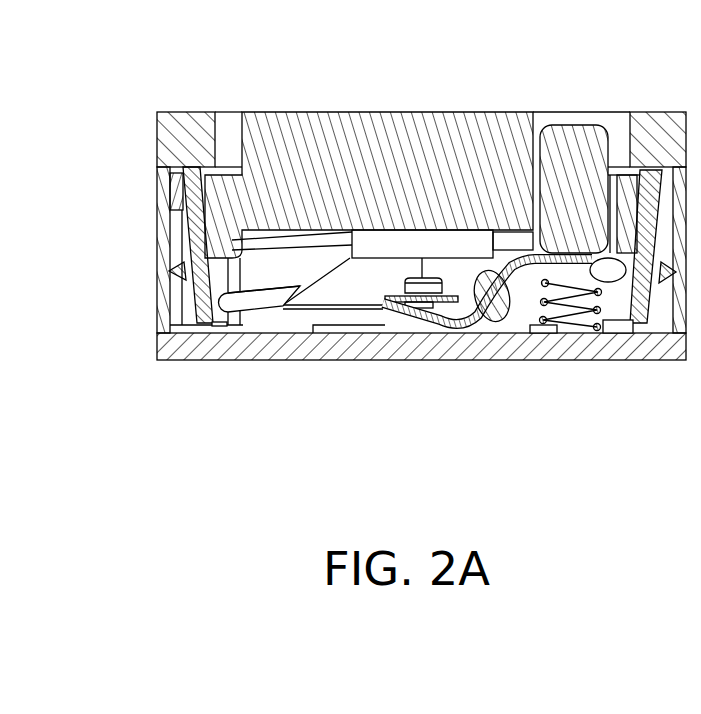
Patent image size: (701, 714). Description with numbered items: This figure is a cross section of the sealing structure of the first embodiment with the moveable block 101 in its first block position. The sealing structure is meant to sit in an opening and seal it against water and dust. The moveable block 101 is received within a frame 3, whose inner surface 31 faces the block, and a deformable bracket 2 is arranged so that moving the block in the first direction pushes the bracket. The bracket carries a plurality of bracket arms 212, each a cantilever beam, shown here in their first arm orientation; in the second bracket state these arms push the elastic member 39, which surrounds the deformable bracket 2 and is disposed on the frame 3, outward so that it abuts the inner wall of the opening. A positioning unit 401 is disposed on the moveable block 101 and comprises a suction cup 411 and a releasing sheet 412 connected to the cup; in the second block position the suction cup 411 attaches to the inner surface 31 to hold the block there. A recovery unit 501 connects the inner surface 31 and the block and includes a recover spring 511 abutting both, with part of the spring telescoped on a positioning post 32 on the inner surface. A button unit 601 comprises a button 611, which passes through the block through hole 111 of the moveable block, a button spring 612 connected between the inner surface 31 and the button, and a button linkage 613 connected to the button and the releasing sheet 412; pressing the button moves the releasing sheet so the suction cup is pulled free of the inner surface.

The moveable block 101 is at (287, 155).
The block through hole 111 is at (541, 123).
The deformable bracket 2 is at (174, 238).
The bracket arms 212 is at (176, 272).
The elastic member 39 is at (172, 312).
The frame 3 is at (168, 368).
The inner surface 31 is at (214, 330).
The positioning post 32 is at (297, 326).
The positioning unit 401 is at (382, 360).
The suction cup 411 is at (353, 288).
The releasing sheet 412 is at (427, 310).
The recovery unit 501 is at (253, 318).
The recover spring 511 is at (267, 296).
The button unit 601 is at (526, 374).
The button 611 is at (580, 274).
The button spring 612 is at (600, 355).
The button linkage 613 is at (508, 278).